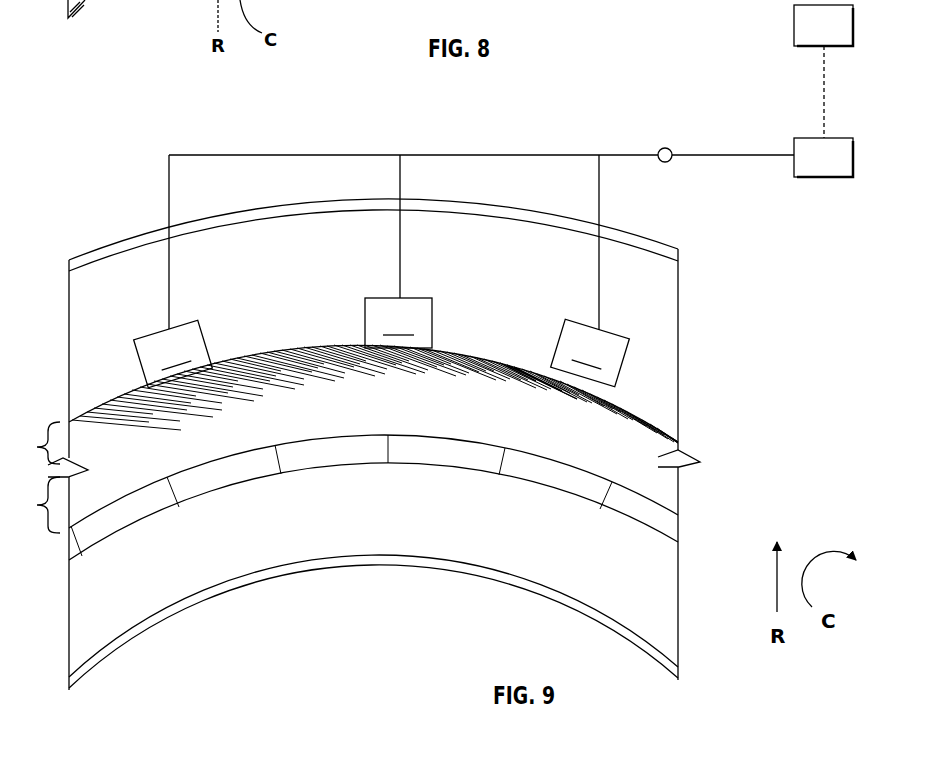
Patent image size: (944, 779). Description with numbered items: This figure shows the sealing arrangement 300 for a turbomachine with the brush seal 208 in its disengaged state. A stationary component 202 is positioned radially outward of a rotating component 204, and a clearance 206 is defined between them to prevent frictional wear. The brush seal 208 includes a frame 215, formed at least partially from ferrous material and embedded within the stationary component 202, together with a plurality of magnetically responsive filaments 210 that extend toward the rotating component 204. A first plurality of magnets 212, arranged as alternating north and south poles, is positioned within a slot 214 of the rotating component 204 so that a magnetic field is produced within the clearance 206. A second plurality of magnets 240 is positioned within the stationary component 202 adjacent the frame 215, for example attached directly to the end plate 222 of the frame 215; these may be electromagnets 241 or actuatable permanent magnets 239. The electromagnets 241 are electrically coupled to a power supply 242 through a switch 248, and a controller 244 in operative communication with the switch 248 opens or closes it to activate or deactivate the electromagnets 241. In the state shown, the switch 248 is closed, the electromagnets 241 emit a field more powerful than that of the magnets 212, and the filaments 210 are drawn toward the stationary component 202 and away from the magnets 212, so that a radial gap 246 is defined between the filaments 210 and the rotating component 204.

The sealing arrangement 300 is at (142, 134).
The stationary component 202 is at (660, 298).
The rotating component 204 is at (665, 582).
The clearance 206 is at (652, 466).
The brush seal 208 is at (115, 397).
The magnetically responsive filaments 210 is at (37, 446).
The first plurality of magnets 212 is at (412, 456).
The slot 214 is at (442, 467).
The frame 215 is at (313, 351).
The end plate 222 is at (513, 356).
The actuatable permanent magnets 239 is at (148, 339).
The second plurality of magnets 240 is at (382, 343).
The electromagnets 241 is at (206, 345).
The power supply 242 is at (837, 171).
The controller 244 is at (837, 38).
The radial gap 246 is at (38, 507).
The switch 248 is at (666, 148).